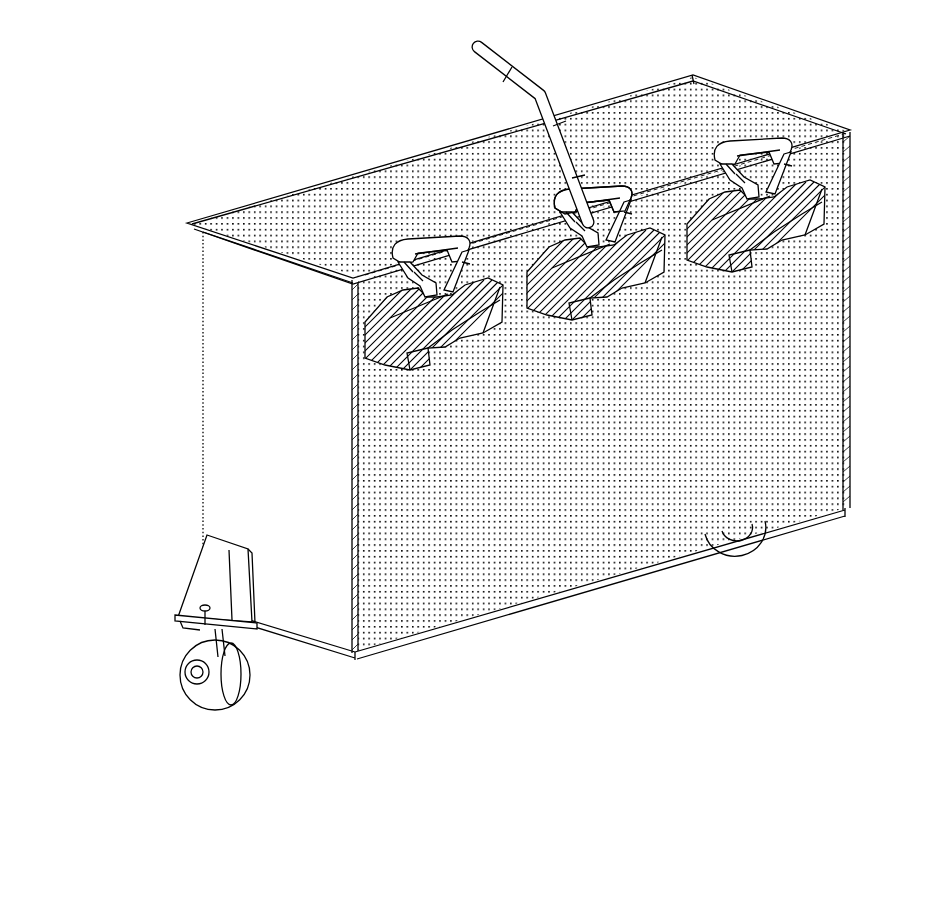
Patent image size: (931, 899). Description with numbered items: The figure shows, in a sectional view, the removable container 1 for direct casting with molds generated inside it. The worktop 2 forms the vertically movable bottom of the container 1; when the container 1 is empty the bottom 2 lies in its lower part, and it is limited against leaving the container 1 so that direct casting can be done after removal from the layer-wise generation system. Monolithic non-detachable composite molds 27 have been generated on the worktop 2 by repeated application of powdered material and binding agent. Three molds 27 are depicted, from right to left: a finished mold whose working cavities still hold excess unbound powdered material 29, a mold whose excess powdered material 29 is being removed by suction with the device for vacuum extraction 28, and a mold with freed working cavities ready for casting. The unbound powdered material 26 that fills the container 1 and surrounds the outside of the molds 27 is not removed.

The removable container 1 is at (450, 395).
The worktop 2 is at (640, 565).
The unbound powdered material 26 is at (383, 403).
The composite molds 27 is at (548, 286).
The device for vacuum extraction 28 is at (566, 141).
The excess unbound powdered material 29 is at (578, 259).